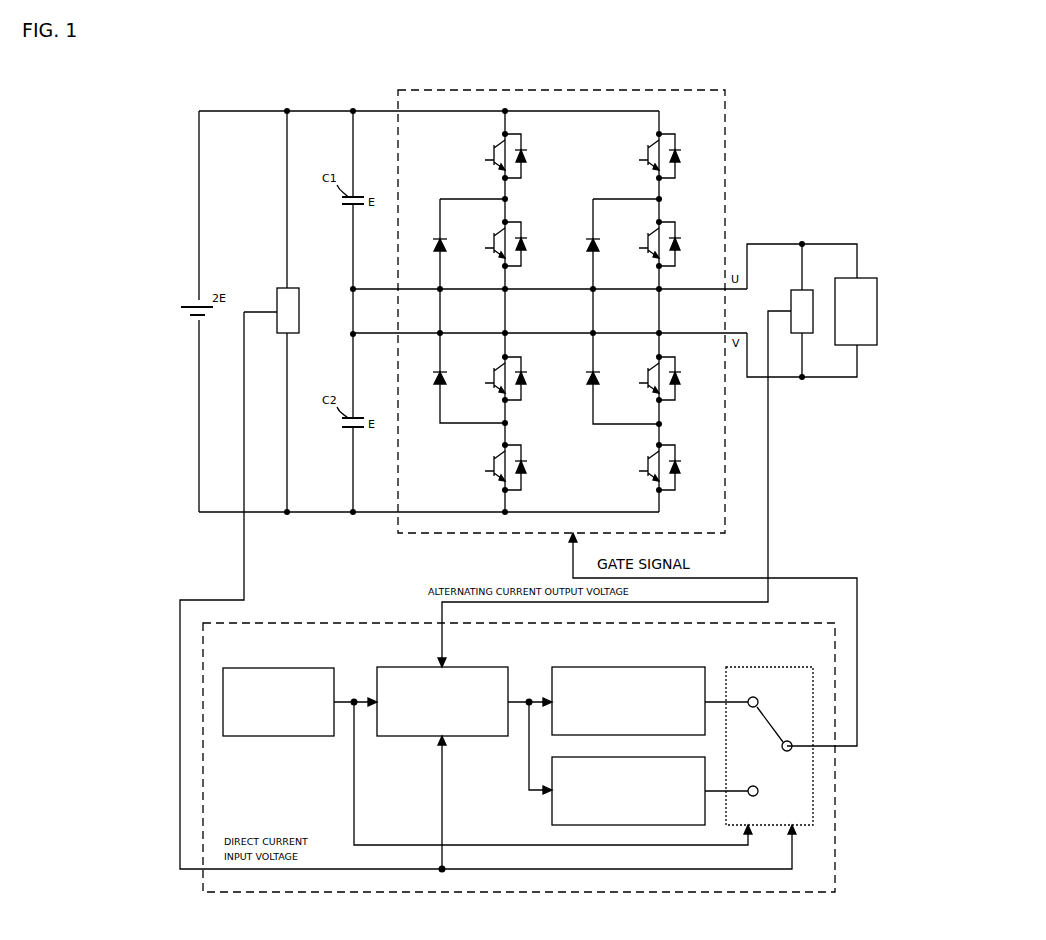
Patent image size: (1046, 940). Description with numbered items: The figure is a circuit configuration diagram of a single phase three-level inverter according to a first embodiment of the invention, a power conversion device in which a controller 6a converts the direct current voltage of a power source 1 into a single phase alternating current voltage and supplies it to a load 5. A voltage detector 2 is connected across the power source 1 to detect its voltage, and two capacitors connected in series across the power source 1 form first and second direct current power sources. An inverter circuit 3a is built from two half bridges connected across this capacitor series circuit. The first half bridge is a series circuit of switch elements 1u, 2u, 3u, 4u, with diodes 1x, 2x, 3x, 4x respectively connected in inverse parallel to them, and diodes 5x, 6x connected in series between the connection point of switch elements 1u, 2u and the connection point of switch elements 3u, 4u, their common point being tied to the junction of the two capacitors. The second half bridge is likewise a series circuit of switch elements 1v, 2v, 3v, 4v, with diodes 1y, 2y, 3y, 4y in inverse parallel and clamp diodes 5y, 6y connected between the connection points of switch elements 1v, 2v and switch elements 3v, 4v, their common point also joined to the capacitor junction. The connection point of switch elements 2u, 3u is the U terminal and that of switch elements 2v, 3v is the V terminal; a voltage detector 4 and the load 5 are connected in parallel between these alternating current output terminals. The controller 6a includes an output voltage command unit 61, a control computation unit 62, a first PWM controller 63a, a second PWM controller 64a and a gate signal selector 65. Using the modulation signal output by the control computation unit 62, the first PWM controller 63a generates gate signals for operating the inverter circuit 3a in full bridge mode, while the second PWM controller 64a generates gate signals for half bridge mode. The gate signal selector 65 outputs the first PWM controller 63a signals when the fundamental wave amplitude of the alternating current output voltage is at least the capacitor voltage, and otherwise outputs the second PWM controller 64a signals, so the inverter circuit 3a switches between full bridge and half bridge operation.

The power source 1 is at (191, 306).
The voltage detector 2 is at (300, 288).
The inverter circuit 3a is at (726, 146).
The voltage detector 4 is at (815, 290).
The load 5 is at (872, 278).
The switch element 1u is at (488, 152).
The diode 1x is at (527, 163).
The switch element 2u is at (488, 242).
The diode 2x is at (527, 251).
The switch element 3u is at (488, 375).
The diode 3x is at (527, 385).
The switch element 4u is at (488, 464).
The diode 4x is at (527, 475).
The diode 5x is at (435, 240).
The diode 6x is at (435, 373).
The switch element 1v is at (642, 152).
The diode 1y is at (681, 163).
The switch element 2v is at (642, 242).
The diode 2y is at (681, 251).
The switch element 3v is at (642, 375).
The diode 3y is at (681, 385).
The switch element 4v is at (642, 464).
The diode 4y is at (681, 475).
The diode 5y is at (589, 240).
The diode 6y is at (589, 373).
The controller 6a is at (333, 622).
The output voltage command unit 61 is at (262, 667).
The control computation unit 62 is at (408, 667).
The first PWM controller 63a is at (572, 667).
The second PWM controller 64a is at (552, 812).
The gate signal selector 65 is at (745, 667).